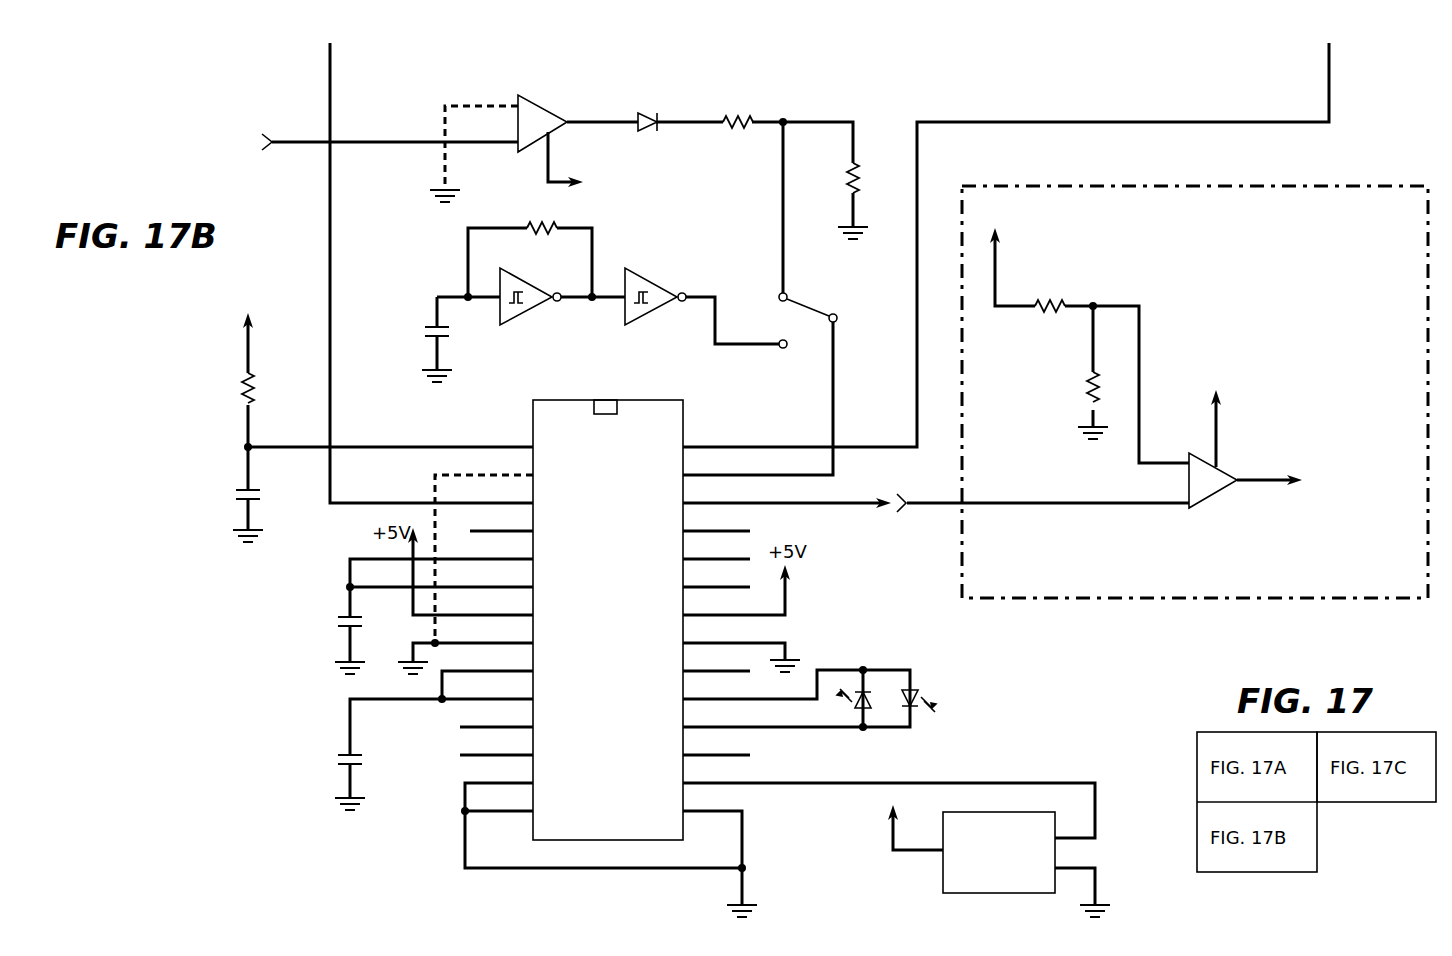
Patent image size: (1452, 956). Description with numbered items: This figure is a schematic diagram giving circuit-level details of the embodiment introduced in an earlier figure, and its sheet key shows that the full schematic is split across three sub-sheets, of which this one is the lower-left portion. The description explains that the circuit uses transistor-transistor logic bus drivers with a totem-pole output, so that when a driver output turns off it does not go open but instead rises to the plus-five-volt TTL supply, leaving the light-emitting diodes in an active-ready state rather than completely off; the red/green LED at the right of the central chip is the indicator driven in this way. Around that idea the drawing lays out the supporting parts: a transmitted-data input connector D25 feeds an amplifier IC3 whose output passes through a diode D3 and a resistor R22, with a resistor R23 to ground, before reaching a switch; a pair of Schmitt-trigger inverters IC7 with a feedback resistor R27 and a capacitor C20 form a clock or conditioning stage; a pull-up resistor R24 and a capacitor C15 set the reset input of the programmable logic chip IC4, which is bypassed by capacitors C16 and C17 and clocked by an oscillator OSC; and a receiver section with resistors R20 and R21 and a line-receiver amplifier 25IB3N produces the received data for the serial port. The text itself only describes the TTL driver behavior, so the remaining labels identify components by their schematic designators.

The transmitted data input connector D25 is at (328, 141).
The comparator amplifier IC3 is at (565, 139).
The diode D3 is at (648, 107).
The 470 ohm resistor R22 is at (743, 120).
The 470 ohm resistor R23 is at (833, 199).
The 680 ohm feedback resistor R27 is at (530, 246).
The 7414 Schmitt trigger inverters IC7 is at (612, 315).
The 10 uF capacitor C20 is at (413, 339).
The 10K pull-up resistor R24 is at (239, 367).
The 10 uF capacitor C15 is at (224, 494).
The EPM5032 programmable logic device IC4 is at (604, 608).
The 470 pF capacitor C16 is at (320, 635).
The 470 pF capacitor C17 is at (320, 772).
The element LED is at (863, 698).
The 24 MHz oscillator OSC is at (896, 850).
The 33K resistor R20 is at (1084, 332).
The 10K resistor R21 is at (1076, 372).
The line receiver amplifier 25IB3N is at (1299, 466).